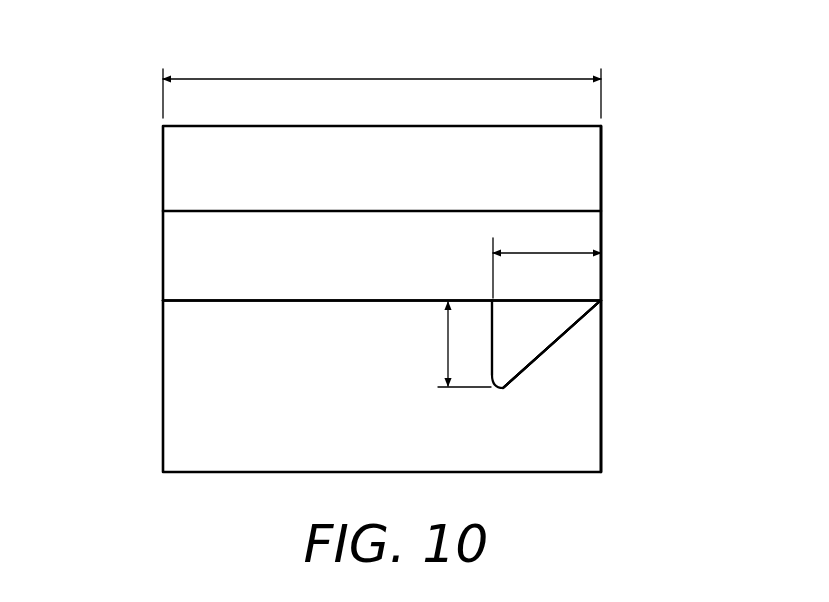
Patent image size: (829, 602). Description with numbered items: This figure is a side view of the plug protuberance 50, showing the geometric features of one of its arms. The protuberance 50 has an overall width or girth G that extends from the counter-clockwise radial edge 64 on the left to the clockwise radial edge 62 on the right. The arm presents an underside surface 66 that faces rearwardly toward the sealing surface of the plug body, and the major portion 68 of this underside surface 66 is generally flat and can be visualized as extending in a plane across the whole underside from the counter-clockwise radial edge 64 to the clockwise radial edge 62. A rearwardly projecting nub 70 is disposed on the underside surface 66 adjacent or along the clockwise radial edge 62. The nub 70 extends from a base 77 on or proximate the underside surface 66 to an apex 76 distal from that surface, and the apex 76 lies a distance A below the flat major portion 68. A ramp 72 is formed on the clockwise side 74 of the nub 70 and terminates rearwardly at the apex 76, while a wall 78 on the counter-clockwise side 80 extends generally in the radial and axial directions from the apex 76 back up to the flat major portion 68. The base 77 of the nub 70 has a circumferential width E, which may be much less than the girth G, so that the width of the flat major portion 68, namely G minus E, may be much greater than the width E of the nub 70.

The protuberance 50 is at (300, 118).
The clockwise radial edge 62 is at (603, 255).
The counter-clockwise radial edge 64 is at (162, 258).
The underside surface 66 is at (382, 364).
The major portion 68 is at (345, 302).
The nub 70 is at (530, 332).
The ramp 72 is at (600, 373).
The clockwise side 74 is at (545, 357).
The apex 76 is at (500, 390).
The base 77 is at (558, 312).
The wall 78 is at (424, 367).
The counter-clockwise side 80 is at (486, 356).
The girth G is at (362, 78).
The circumferential width E is at (545, 253).
The distance A is at (448, 338).